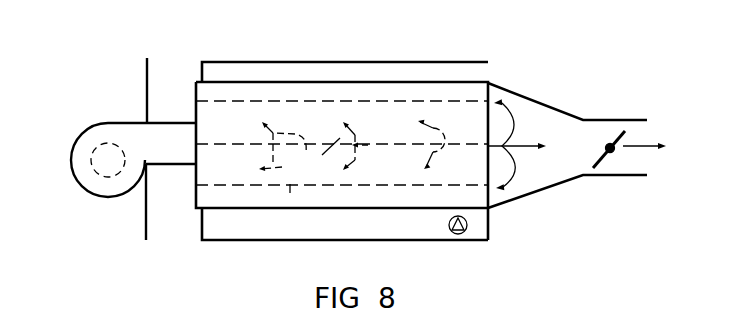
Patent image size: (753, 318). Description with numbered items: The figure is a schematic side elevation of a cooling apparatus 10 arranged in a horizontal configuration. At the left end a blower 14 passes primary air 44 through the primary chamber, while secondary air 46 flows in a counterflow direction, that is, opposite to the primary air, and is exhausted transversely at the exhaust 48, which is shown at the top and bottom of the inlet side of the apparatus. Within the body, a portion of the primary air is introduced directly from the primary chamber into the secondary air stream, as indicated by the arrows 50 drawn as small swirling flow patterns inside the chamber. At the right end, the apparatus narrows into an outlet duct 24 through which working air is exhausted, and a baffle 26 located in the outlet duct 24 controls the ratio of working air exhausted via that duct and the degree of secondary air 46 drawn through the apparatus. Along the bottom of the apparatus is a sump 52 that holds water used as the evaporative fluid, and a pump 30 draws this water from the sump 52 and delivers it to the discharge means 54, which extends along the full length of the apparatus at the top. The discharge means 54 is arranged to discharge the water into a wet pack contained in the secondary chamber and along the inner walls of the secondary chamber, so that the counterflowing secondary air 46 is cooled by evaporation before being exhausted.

The drying apparatus 10 is at (403, 38).
The blower 14 is at (82, 158).
The outlet duct 24 is at (605, 176).
The baffle 26 is at (618, 128).
The pump 30 is at (462, 233).
The primary air 44 is at (390, 140).
The secondary air 46 is at (411, 102).
The transverse exhaust 48 is at (197, 101).
The arrows 50 is at (288, 167).
The sump 52 is at (480, 218).
The discharge means 54 is at (337, 76).